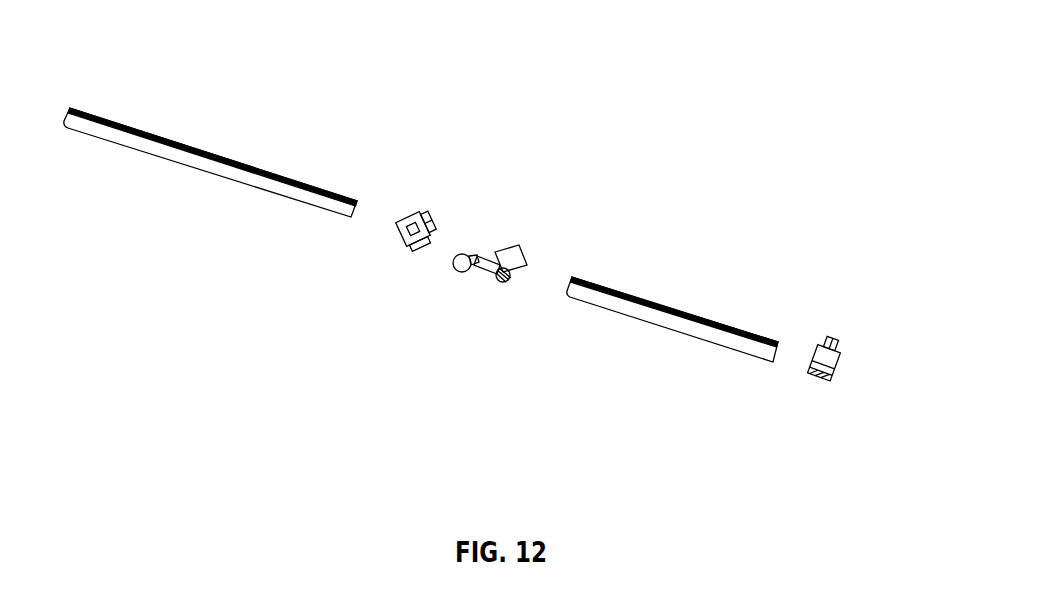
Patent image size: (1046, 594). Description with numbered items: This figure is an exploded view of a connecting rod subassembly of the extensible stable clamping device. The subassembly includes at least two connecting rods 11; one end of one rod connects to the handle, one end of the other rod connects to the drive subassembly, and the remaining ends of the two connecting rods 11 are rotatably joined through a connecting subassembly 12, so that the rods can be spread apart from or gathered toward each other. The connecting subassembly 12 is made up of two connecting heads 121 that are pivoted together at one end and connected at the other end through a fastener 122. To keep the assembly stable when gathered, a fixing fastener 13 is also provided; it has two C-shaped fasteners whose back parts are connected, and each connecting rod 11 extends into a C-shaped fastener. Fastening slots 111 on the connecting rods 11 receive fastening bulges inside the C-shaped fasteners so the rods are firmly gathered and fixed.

The connecting rod 11 is at (200, 163).
The fastening slot 111 is at (155, 137).
The connecting subassembly 12 is at (585, 202).
The connecting head 121 is at (510, 252).
The fastener 122 is at (463, 248).
The fixing fastener 13 is at (832, 338).